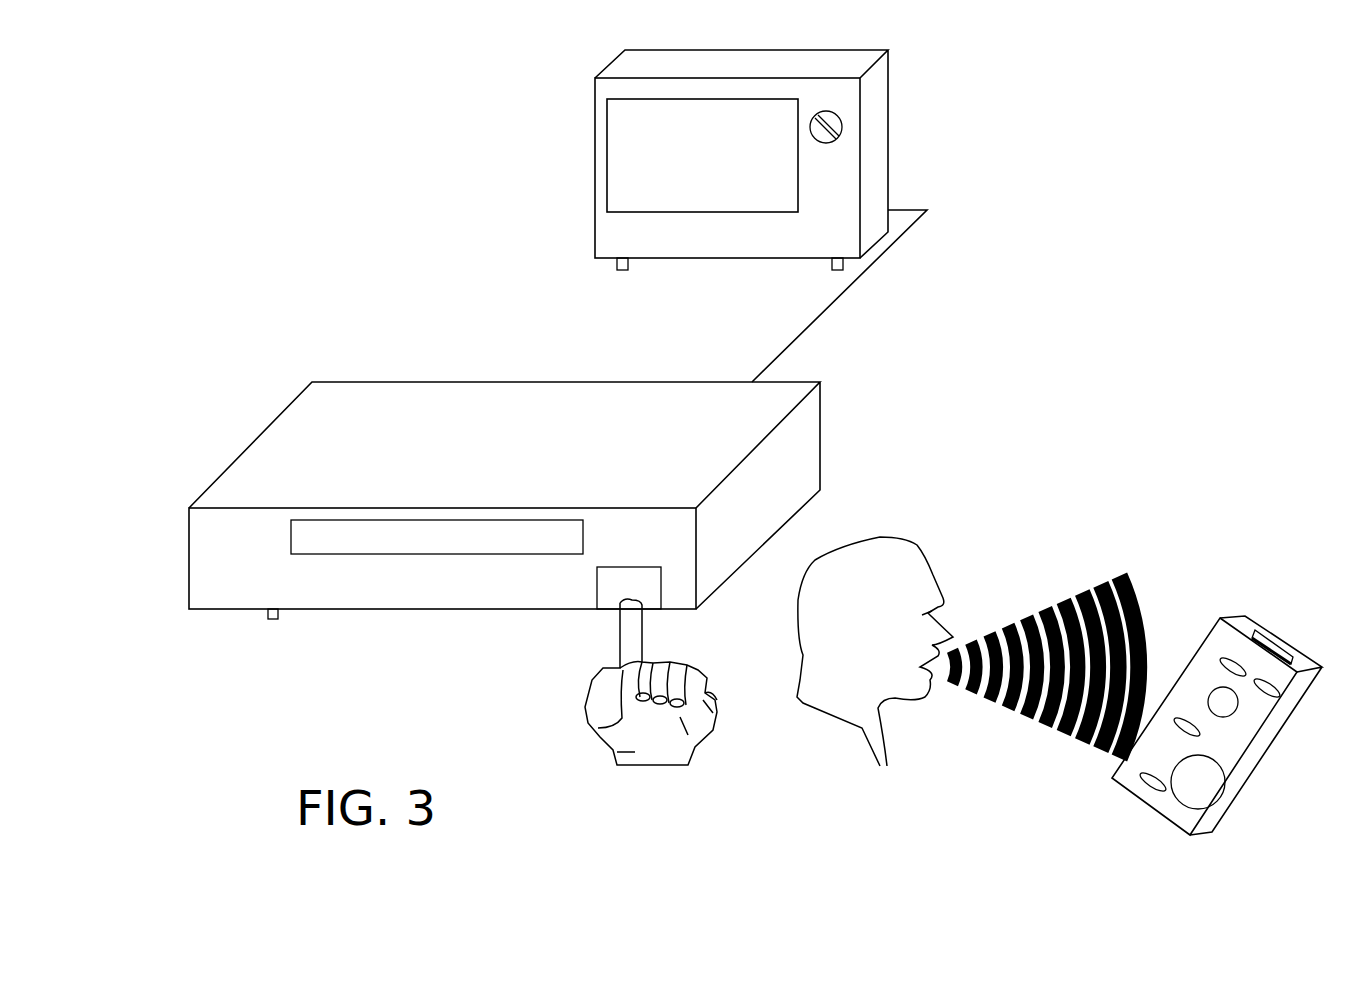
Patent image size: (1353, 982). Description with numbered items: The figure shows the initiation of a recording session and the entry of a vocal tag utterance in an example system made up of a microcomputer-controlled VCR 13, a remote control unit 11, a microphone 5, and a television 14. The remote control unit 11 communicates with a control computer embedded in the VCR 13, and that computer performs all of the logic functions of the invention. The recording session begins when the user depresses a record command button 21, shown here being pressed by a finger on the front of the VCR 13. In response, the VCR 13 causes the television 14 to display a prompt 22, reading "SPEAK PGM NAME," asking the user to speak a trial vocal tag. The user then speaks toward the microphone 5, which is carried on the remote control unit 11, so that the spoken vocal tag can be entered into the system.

The microphone 5 is at (1228, 696).
The remote control unit 11 is at (1227, 616).
The VCR 13 is at (572, 381).
The television 14 is at (787, 263).
The record command button 21 is at (606, 600).
The prompt 22 is at (628, 167).